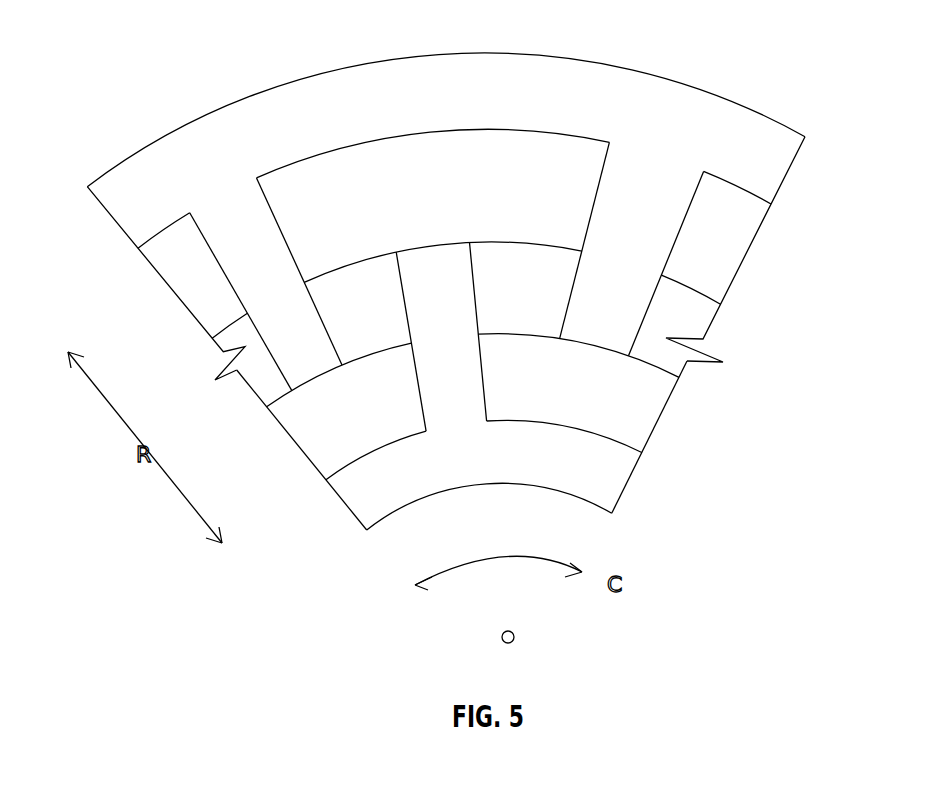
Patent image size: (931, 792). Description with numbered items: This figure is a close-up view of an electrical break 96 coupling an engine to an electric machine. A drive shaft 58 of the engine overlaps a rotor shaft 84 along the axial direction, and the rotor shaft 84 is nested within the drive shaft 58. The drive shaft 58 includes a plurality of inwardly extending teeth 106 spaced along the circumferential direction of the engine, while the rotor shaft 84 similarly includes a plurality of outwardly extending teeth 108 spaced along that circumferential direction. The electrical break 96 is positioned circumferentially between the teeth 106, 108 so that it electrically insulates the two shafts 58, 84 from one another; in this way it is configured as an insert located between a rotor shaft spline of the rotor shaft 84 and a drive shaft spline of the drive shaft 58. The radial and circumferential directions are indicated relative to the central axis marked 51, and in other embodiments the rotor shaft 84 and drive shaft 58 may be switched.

The drive shaft 58 is at (552, 85).
The inwardly extending teeth 106 is at (265, 238).
The electrical break 96 is at (345, 285).
The outwardly extending teeth 108 is at (430, 282).
The rotor shaft 84 is at (577, 468).
The central axis 51 is at (514, 641).